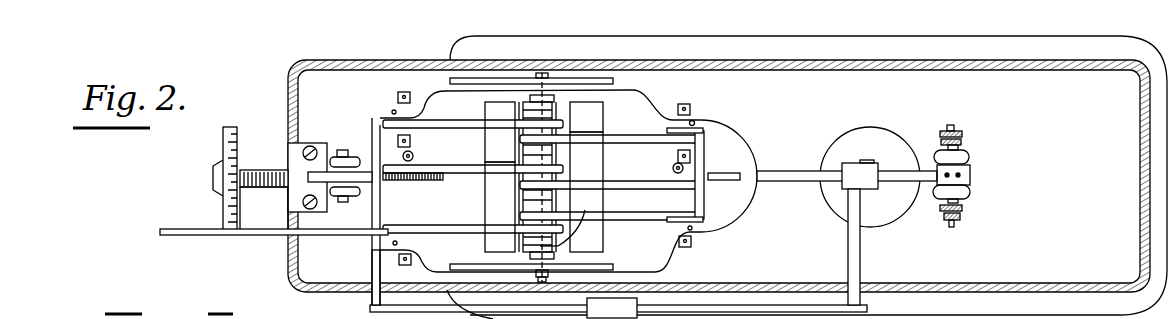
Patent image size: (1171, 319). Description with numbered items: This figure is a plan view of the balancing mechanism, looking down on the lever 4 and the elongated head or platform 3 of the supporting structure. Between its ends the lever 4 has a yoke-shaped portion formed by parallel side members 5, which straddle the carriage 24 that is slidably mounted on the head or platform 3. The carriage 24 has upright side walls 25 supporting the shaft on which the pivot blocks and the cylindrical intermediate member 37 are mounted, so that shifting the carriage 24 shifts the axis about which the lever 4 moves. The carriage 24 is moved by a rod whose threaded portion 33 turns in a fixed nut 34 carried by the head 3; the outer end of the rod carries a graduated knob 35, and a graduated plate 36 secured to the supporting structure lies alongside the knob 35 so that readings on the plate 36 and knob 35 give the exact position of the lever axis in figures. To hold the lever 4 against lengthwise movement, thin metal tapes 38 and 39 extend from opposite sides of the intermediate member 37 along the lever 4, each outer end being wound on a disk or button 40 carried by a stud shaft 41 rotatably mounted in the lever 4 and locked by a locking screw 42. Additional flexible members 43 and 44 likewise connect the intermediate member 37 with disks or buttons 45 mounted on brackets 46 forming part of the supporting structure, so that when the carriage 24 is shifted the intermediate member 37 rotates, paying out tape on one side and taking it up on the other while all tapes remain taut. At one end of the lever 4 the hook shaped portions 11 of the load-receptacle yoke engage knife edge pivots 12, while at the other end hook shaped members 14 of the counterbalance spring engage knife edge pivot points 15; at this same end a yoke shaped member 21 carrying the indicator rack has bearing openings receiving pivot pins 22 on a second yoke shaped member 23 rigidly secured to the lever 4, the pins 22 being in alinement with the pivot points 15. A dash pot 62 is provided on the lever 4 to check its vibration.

The head or platform 3 is at (212, 181).
The lever 4 is at (377, 110).
The side members 5 is at (677, 166).
The hook shaped portions 11 is at (358, 202).
The knife edge pivots 12 is at (344, 150).
The hook shaped members 14 is at (969, 190).
The knife edge pivot points 15 is at (963, 148).
The yoke shaped member 21 is at (961, 216).
The pivot pins 22 is at (953, 228).
The second yoke shaped member 23 is at (963, 205).
The carriage 24 is at (588, 128).
The upright side walls 25 is at (568, 217).
The threaded portion 33 is at (264, 200).
The fixed nut 34 is at (297, 167).
The knob 35 is at (238, 164).
The plate 36 is at (252, 235).
The intermediate member 37 is at (532, 198).
The flexible connecting members (tapes) 38 is at (625, 138).
The flexible connecting members (tapes) 39 is at (457, 124).
The disk or button 40 is at (693, 132).
The stud shaft 41 is at (700, 253).
The locking screw 42 is at (691, 121).
The additional flexible member 43 is at (588, 180).
The additional flexible member 44 is at (500, 168).
The disks or buttons 45 is at (400, 177).
The brackets 46 is at (410, 158).
The dash pot 62 is at (847, 216).